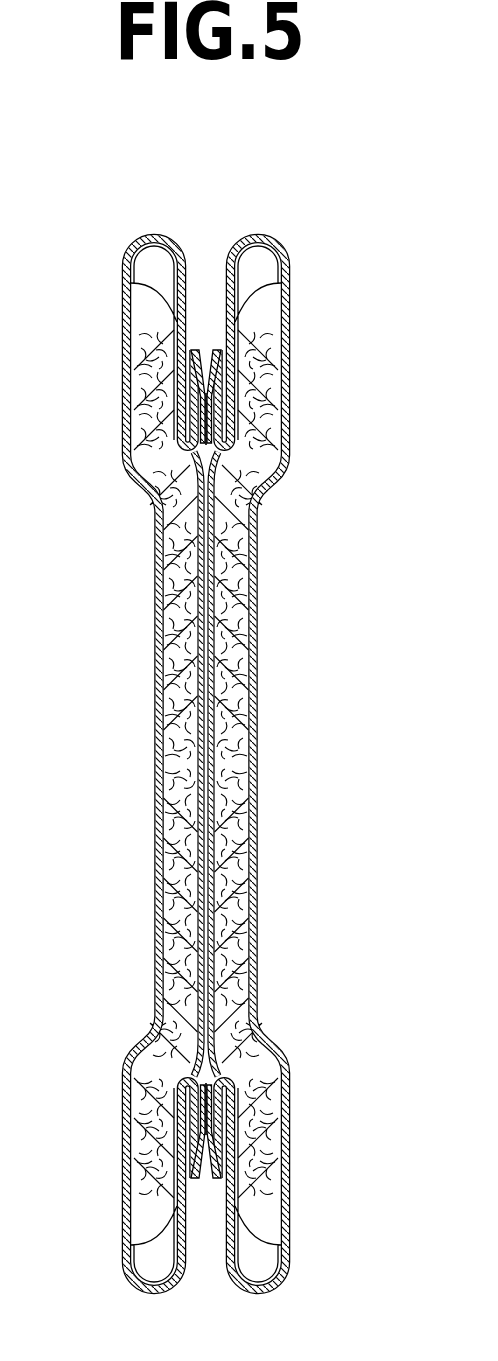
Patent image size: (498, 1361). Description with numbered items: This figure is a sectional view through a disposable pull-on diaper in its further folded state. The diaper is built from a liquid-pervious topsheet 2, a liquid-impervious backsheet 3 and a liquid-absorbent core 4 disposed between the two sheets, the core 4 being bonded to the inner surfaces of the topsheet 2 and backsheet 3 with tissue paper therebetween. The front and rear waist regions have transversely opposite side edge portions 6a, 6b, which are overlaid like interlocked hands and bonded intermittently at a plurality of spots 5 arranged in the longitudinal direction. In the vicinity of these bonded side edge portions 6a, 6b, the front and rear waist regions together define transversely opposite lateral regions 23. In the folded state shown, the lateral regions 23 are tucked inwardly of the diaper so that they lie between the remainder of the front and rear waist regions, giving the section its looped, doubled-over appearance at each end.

The topsheet 2 is at (192, 782).
The backsheet 3 is at (152, 621).
The core 4 is at (237, 608).
The spots 5 is at (206, 415).
The side edge portion 6a is at (206, 362).
The side edge portion 6b is at (206, 362).
The lateral regions 23 is at (188, 285).